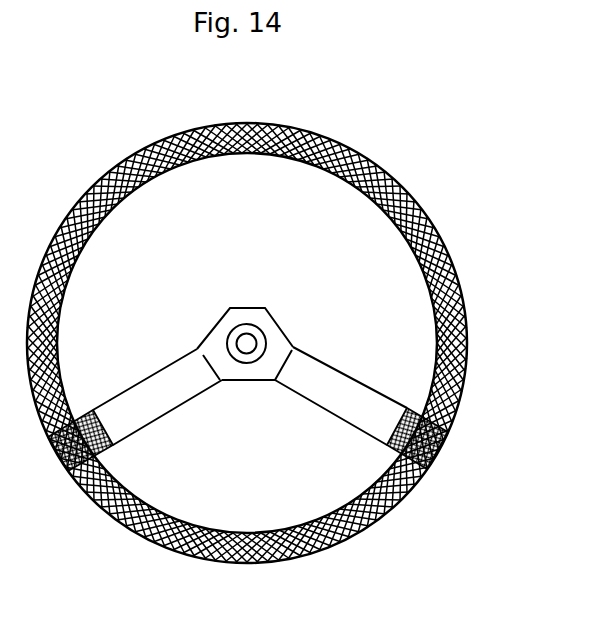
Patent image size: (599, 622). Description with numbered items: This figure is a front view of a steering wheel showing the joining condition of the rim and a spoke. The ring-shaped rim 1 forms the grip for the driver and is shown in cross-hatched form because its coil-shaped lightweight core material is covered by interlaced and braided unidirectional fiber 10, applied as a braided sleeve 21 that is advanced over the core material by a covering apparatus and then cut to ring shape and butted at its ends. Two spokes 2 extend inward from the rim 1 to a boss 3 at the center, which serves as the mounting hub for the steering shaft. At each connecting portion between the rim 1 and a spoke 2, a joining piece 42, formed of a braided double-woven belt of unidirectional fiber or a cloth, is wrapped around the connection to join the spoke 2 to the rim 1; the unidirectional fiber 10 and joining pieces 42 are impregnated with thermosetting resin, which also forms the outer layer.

The rim 1 is at (238, 122).
The spoke 2 is at (352, 374).
The boss 3 is at (262, 333).
The unidirectional fiber 10 is at (467, 353).
The braided sleeve 21 is at (467, 317).
The joining piece 42 is at (115, 447).